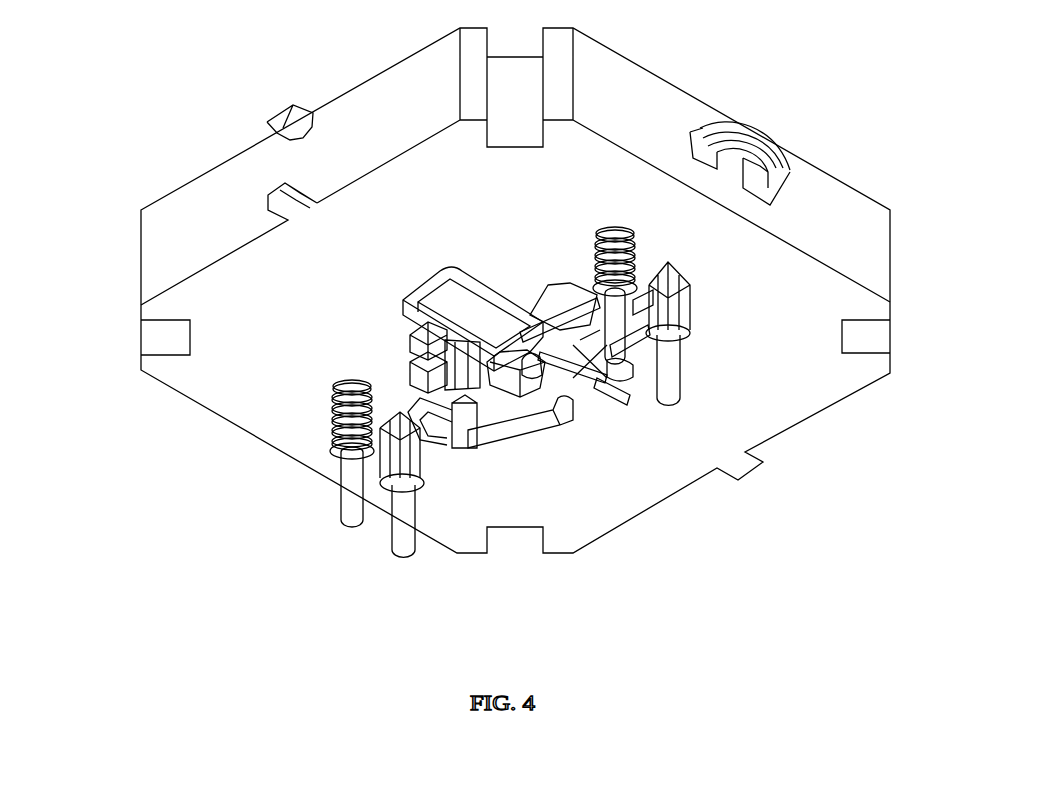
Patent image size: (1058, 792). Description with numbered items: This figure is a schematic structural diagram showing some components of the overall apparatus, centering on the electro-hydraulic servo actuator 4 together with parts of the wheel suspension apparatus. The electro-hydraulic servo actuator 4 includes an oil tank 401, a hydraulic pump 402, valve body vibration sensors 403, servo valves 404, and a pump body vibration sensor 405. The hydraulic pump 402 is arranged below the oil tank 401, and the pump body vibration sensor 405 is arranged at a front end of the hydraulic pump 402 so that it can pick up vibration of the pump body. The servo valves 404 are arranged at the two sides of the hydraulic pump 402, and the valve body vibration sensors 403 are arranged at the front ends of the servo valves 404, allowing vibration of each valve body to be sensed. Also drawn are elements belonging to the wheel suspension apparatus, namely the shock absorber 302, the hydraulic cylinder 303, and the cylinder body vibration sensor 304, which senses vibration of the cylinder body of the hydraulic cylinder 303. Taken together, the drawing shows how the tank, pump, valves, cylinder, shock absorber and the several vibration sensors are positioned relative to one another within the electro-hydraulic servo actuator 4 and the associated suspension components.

The oil tank 401 is at (430, 280).
The hydraulic pump 402 is at (410, 323).
The valve body vibration sensor 403 is at (413, 353).
The servo valve 404 is at (420, 383).
The pump body vibration sensor 405 is at (432, 382).
The shock absorber 302 is at (340, 470).
The hydraulic cylinder 303 is at (390, 517).
The cylinder body vibration sensor 304 is at (690, 287).
The electro-hydraulic servo actuator 4 is at (600, 258).